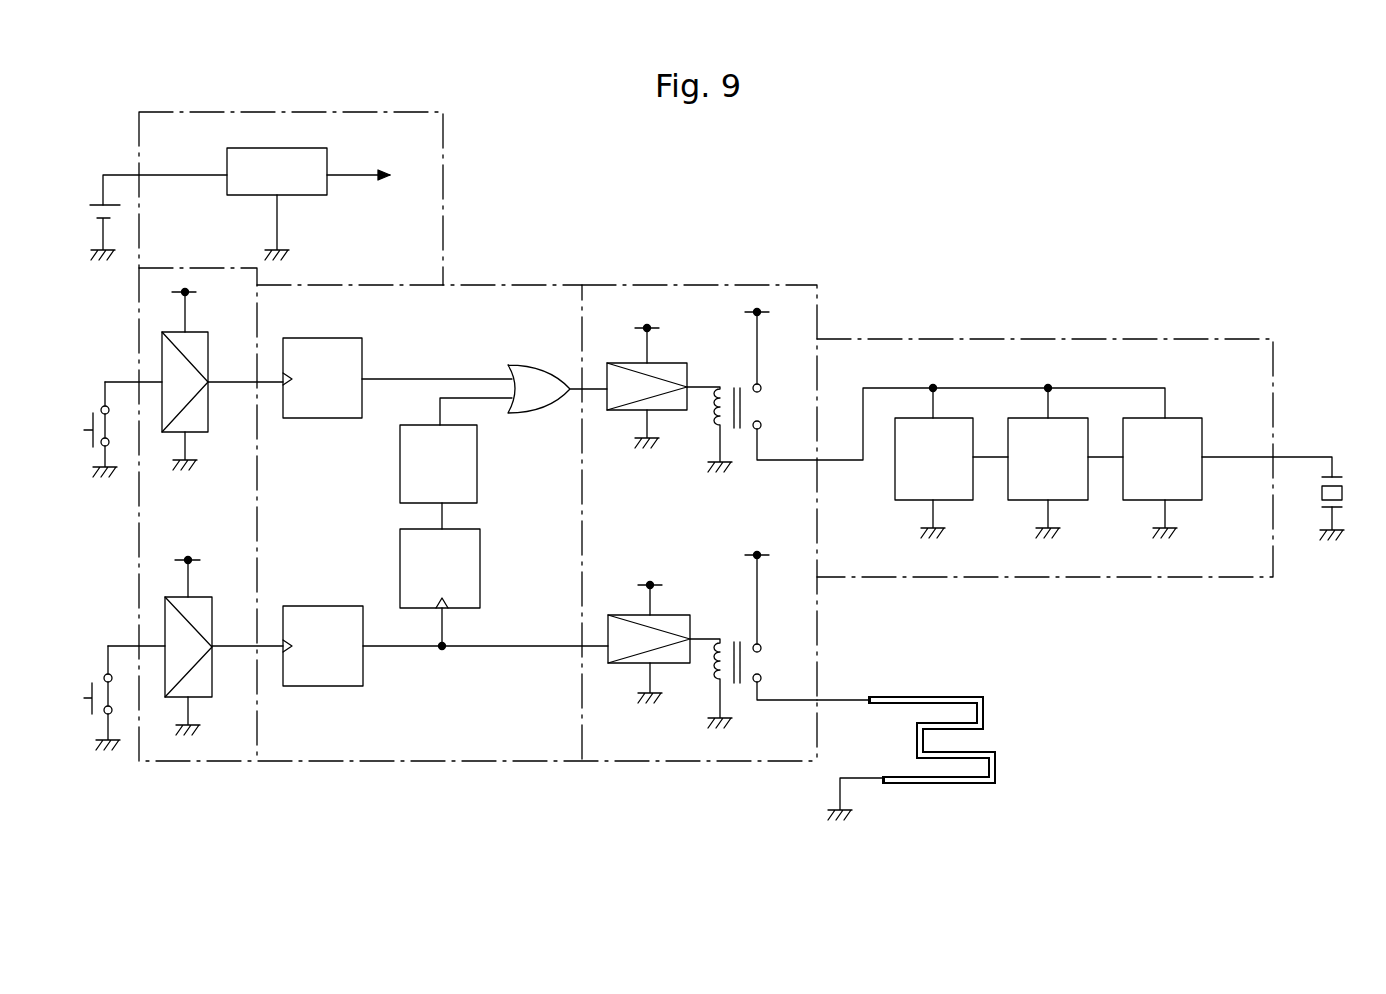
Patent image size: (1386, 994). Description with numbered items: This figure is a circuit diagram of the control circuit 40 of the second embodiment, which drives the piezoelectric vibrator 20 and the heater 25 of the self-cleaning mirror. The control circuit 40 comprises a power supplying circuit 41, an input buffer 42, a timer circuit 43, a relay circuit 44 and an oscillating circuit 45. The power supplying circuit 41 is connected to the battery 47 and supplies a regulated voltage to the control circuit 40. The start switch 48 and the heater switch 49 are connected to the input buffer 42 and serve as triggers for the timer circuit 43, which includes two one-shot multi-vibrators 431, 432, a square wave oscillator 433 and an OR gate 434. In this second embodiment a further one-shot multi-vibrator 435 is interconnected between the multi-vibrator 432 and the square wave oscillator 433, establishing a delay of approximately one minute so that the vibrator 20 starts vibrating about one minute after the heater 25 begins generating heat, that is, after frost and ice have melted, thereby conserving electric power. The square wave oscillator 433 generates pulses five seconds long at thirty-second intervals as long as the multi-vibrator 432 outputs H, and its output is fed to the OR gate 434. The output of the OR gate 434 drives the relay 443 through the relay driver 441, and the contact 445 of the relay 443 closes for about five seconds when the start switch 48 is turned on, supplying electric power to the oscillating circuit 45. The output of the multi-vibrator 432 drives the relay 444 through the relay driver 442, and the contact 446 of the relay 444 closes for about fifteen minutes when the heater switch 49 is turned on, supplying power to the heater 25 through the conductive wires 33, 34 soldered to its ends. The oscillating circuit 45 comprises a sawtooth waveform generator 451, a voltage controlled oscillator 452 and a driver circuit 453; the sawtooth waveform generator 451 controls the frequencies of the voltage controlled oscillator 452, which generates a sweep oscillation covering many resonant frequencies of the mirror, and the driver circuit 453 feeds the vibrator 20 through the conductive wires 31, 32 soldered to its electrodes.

The piezoelectric vibrator 20 is at (1344, 487).
The heater 25 is at (985, 712).
The conductive wire 31 is at (1297, 455).
The conductive wire 32 is at (1328, 517).
The conductive wire 33 is at (849, 698).
The conductive wire 34 is at (870, 780).
The control circuit 40 is at (905, 295).
The power supplying circuit 41 is at (307, 108).
The input buffer 42 is at (185, 765).
The timer circuit 43 is at (432, 573).
The relay circuit 44 is at (873, 573).
The oscillating circuit 45 is at (1045, 500).
The battery 47 is at (92, 203).
The start switch 48 is at (93, 413).
The heater switch 49 is at (92, 683).
The one-shot multi-vibrator 431 is at (322, 420).
The one-shot multi-vibrator 432 is at (330, 688).
The square wave oscillator 433 is at (478, 470).
The OR gate 434 is at (535, 365).
The one-shot multi-vibrator 435 is at (480, 566).
The relay driver 441 is at (626, 412).
The relay driver 442 is at (620, 614).
The relay 443 is at (740, 450).
The relay 444 is at (747, 702).
The contact 445 is at (770, 428).
The contact 446 is at (773, 680).
The sawtooth waveform generator 451 is at (903, 502).
The voltage controlled oscillator 452 is at (1015, 502).
The driver circuit 453 is at (1137, 500).